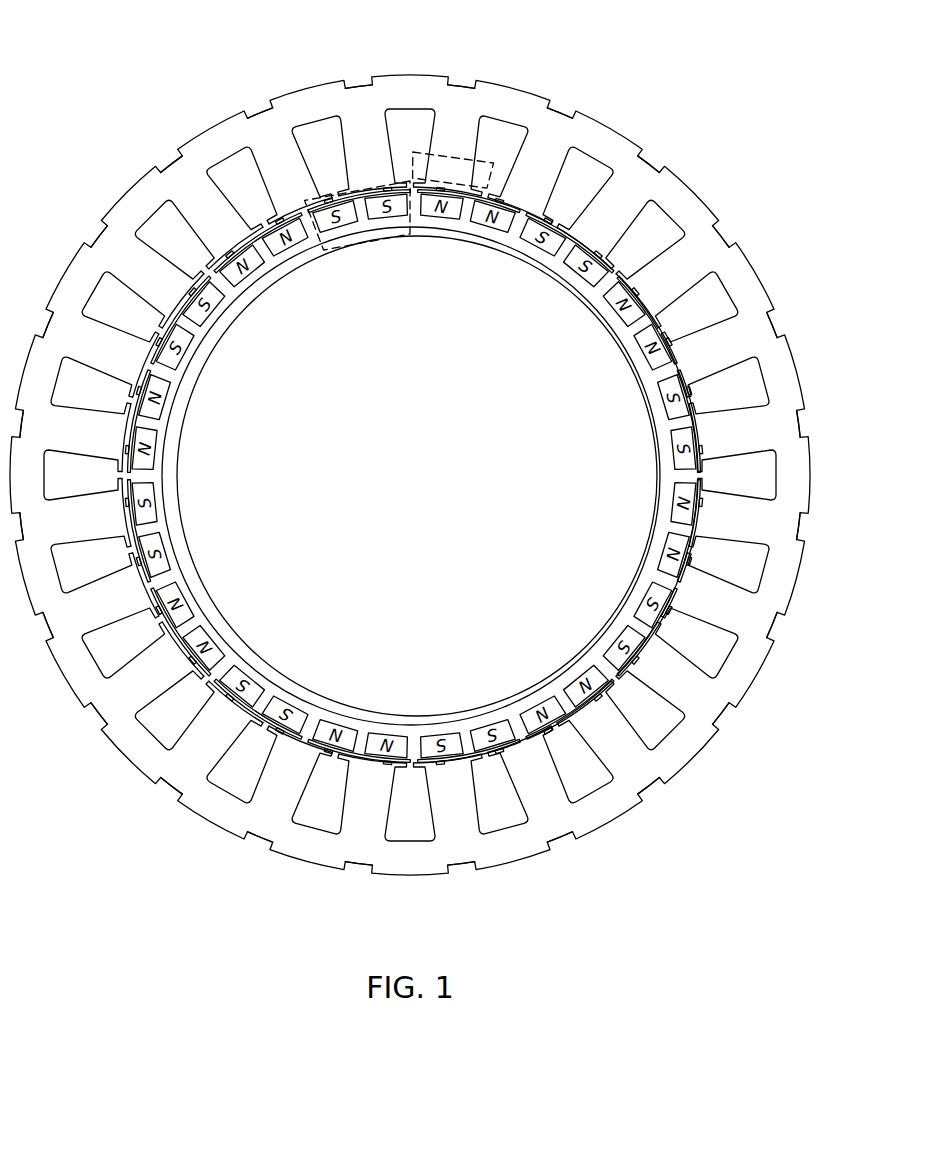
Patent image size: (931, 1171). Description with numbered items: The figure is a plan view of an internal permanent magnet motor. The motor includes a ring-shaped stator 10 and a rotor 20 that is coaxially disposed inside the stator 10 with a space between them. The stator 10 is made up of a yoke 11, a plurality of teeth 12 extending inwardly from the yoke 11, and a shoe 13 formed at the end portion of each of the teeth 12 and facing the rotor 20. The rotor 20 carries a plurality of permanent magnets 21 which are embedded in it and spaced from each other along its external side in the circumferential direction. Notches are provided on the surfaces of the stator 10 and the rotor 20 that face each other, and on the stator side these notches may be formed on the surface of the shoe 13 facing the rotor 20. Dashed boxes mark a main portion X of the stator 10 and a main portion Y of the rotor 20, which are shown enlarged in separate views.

The stator 10 is at (712, 184).
The yoke 11 is at (615, 125).
The teeth 12 is at (540, 156).
The shoe 13 is at (612, 263).
The rotor 20 is at (503, 240).
The permanent magnets 21 is at (285, 247).
The main portion X of the stator X is at (447, 150).
The main portion Y of the rotor Y is at (400, 178).